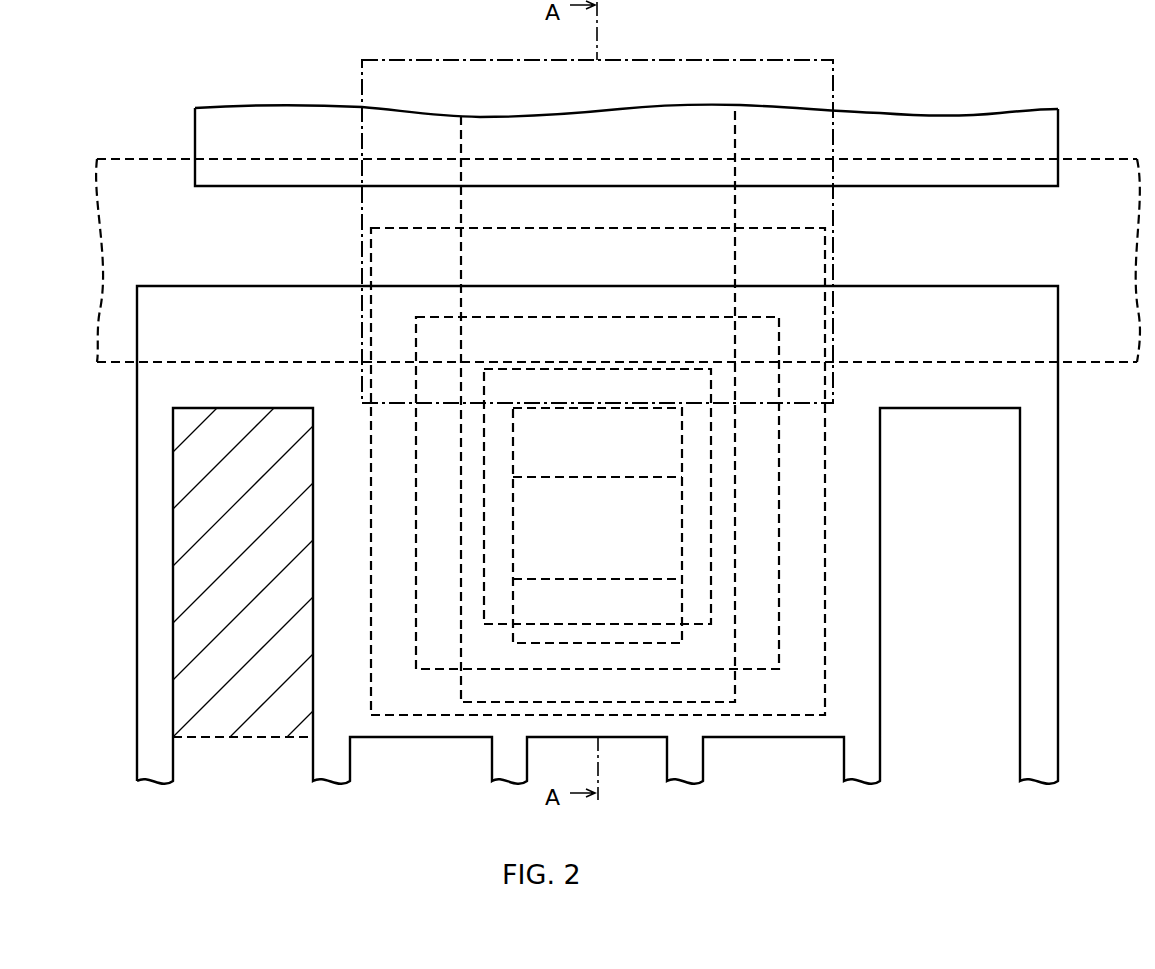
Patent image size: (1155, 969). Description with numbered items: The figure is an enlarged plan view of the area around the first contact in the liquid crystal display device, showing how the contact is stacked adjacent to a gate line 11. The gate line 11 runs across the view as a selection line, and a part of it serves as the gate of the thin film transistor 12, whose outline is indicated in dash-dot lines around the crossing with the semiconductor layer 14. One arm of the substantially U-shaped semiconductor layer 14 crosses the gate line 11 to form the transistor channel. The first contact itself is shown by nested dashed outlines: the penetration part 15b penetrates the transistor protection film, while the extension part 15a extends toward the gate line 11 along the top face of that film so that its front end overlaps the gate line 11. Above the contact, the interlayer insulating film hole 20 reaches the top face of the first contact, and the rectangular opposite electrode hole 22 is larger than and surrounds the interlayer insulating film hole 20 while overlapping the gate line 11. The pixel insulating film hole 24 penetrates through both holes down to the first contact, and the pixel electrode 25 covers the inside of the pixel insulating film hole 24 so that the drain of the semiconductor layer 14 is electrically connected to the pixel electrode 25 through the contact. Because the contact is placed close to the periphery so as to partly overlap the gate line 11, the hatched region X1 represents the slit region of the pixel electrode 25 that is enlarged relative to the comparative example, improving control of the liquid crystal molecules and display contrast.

The gate line 11 is at (1098, 370).
The thin film transistor 12 is at (835, 78).
The semiconductor layer 14 is at (460, 133).
The extension part 15a is at (428, 717).
The penetration part 15b is at (660, 604).
The interlayer insulating film hole 20 is at (712, 533).
The opposite electrode hole 22 is at (768, 672).
The pixel insulating film hole 24 is at (683, 441).
The pixel electrode 25 is at (1010, 118).
The hatched region X1 is at (237, 739).